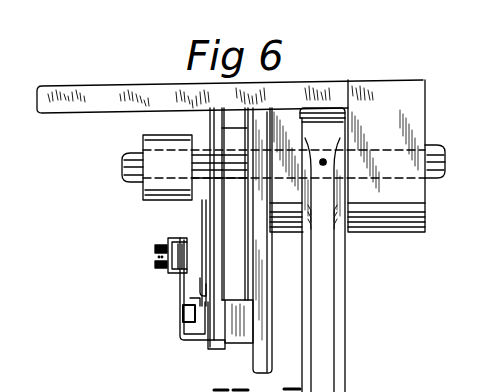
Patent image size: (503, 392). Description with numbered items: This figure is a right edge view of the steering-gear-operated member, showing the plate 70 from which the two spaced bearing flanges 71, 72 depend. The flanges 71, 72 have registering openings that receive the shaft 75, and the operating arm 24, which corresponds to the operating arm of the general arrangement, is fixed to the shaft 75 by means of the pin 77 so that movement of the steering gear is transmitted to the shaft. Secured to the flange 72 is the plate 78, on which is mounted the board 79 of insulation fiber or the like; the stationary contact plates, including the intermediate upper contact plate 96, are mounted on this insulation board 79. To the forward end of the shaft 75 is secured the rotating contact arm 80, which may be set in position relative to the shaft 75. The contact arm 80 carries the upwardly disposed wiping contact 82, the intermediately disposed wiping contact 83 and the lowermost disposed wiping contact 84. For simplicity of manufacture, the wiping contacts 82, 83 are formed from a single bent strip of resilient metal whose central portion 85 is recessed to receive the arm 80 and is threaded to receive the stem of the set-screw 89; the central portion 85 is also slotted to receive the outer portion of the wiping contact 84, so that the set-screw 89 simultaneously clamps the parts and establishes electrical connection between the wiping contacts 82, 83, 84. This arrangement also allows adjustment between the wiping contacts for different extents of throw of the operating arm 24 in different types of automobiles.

The plate 70 is at (285, 94).
The bearing flange 71 is at (389, 208).
The bearing flange 72 is at (288, 207).
The shaft 75 is at (436, 145).
The pin 77 is at (325, 159).
The operating arm 24 is at (325, 322).
The upwardly disposed wiping contact 82 is at (200, 197).
The plate 78 is at (253, 365).
The board 79 is at (206, 348).
The lowermost disposed wiping contact 84 is at (191, 345).
The central portion 85 is at (162, 270).
The set-screw 89 is at (153, 252).
The intermediately disposed wiping contact 83 is at (199, 290).
The intermediate upper contact plate 96 is at (197, 307).
The rotating contact arm 80 is at (185, 318).